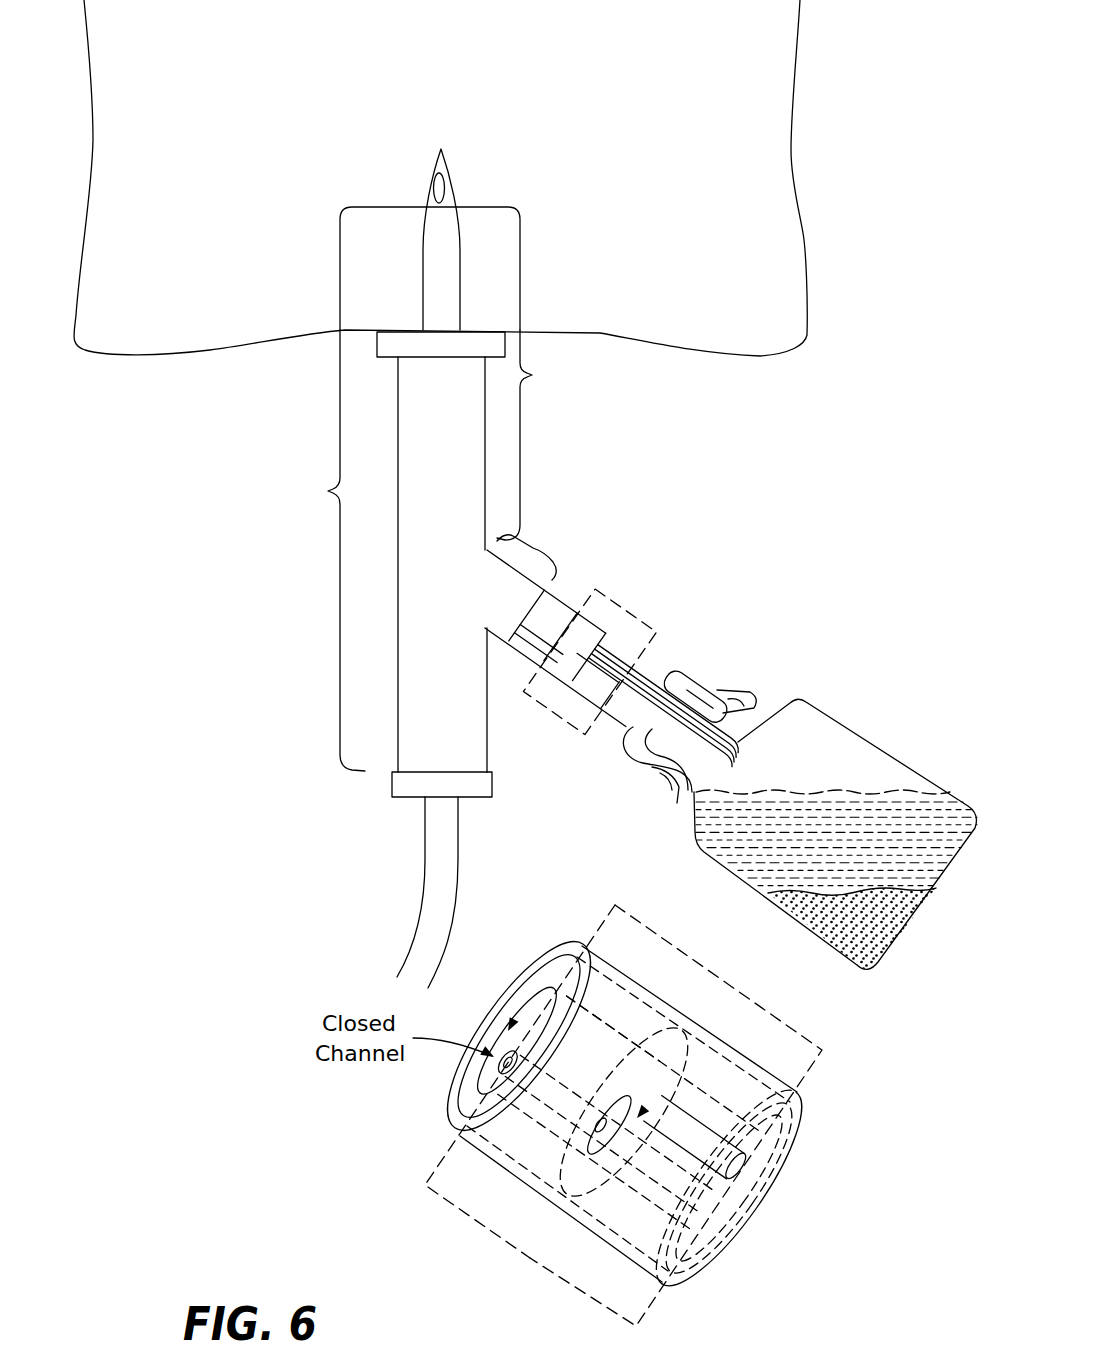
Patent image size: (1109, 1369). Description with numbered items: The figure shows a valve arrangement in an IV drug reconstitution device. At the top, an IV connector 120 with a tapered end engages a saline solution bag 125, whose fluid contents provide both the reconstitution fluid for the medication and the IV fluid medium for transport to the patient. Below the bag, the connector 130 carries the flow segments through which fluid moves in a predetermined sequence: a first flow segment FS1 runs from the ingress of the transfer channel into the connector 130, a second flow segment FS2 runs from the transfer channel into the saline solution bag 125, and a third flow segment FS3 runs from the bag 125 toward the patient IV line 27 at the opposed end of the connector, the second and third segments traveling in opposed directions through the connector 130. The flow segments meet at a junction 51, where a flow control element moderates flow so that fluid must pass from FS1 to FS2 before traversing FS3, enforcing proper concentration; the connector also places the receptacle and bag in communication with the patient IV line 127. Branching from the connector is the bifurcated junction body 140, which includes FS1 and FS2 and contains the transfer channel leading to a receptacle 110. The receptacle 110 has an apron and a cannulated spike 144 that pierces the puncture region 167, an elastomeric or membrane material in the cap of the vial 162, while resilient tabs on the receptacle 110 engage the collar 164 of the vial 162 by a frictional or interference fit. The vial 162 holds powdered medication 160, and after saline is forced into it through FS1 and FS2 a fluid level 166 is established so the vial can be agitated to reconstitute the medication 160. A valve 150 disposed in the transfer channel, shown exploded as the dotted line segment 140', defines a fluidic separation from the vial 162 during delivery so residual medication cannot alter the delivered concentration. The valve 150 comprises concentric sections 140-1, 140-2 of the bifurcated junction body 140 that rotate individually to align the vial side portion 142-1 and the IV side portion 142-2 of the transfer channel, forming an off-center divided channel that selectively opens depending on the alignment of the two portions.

The IV connector 120 is at (443, 150).
The saline solution bag 125 is at (703, 214).
The connector 130 is at (375, 315).
The junction 51 is at (452, 578).
The patient IV line 127 is at (390, 780).
The IV line 27 is at (420, 888).
The bifurcated junction body 140 is at (585, 670).
The dotted line segment 140' is at (609, 644).
The receptacle 110 is at (700, 673).
The spike 144 is at (799, 701).
The collar 164 is at (650, 769).
The puncture region 167 is at (631, 729).
The powdered medication 160 is at (853, 883).
The fluid level 166 is at (827, 792).
The vial 162 is at (718, 868).
The valve 150 is at (573, 1112).
The IV side portion 142-2 is at (560, 1090).
The vial side portion 142-1 is at (710, 1085).
The concentric section 140-2 is at (525, 1138).
The concentric section 140-1 is at (620, 1208).
The first flow segment FS1 is at (537, 548).
The second flow segment FS2 is at (542, 435).
The third flow segment FS3 is at (314, 550).